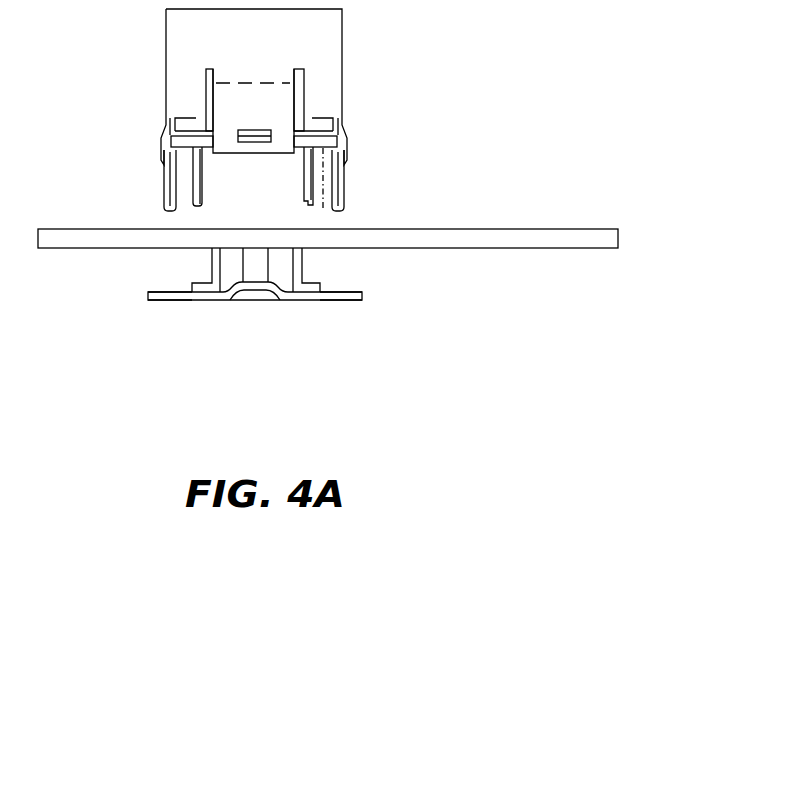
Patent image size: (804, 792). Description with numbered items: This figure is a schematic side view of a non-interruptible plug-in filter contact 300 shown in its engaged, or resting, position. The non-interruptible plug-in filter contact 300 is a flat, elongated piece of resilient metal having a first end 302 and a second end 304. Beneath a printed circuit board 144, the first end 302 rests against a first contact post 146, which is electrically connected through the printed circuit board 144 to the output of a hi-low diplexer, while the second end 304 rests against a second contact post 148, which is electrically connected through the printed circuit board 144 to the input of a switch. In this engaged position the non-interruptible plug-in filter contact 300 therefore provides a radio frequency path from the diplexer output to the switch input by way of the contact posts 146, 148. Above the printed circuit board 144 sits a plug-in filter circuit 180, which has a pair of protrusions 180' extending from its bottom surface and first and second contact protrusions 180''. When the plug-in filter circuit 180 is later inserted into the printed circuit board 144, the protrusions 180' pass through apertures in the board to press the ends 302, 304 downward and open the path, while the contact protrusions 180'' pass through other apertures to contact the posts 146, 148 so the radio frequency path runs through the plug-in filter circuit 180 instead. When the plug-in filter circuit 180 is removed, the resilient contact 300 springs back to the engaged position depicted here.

The plug-in filter circuit 180 is at (291, 87).
The protrusions 180' is at (255, 179).
The contact protrusions 180'' is at (253, 183).
The printed circuit board 144 is at (587, 248).
The first contact post 146 is at (207, 263).
The second contact post 148 is at (303, 263).
The non-interruptible plug-in filter contact 300 is at (315, 300).
The first end 302 is at (183, 302).
The second end 304 is at (343, 300).